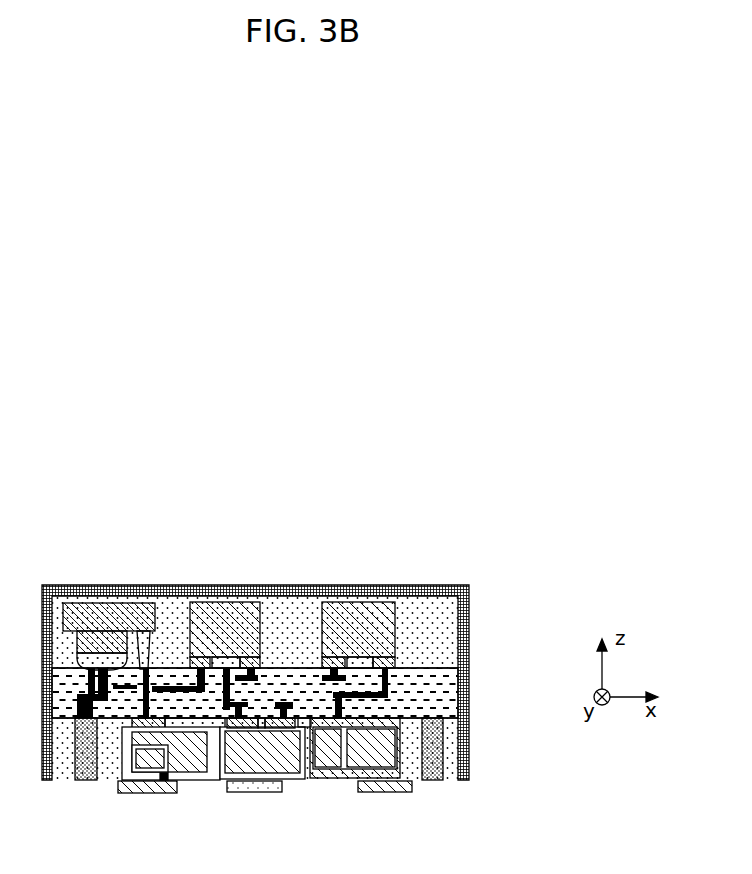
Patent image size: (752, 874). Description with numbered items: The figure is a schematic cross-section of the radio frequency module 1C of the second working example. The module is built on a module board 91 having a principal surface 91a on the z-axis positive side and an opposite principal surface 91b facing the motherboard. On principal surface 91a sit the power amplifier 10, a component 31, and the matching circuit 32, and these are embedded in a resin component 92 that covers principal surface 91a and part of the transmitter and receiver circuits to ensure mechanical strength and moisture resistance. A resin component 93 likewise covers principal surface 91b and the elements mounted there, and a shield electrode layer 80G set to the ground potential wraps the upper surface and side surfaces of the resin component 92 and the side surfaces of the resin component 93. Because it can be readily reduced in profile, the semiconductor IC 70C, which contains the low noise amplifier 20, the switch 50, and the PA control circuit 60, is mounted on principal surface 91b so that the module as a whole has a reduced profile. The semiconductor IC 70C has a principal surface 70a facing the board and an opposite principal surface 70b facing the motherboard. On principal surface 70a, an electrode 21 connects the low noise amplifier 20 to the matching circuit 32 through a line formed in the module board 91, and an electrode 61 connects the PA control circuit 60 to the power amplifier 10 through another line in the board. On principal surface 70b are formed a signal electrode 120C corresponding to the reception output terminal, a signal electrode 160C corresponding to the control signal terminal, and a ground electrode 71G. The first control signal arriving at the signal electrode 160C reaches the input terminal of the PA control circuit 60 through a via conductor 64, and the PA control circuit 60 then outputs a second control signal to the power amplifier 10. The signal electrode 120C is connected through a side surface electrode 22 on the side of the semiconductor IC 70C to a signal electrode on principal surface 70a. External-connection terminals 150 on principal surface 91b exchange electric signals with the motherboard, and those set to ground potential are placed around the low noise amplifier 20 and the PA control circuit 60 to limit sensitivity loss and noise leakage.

The radio frequency module 1C is at (512, 586).
The power amplifier 10 is at (130, 617).
The low noise amplifier 20 is at (338, 760).
The electrode 21 is at (312, 722).
The side surface electrode 22 is at (407, 767).
The electronic component 31 is at (236, 623).
The matching circuit 32 is at (360, 623).
The switch 50 is at (220, 775).
The PA control circuit 60 is at (190, 763).
The electrode 61 is at (131, 722).
The via conductor 64 is at (169, 779).
The principal surface 70a is at (302, 718).
The principal surface 70b is at (290, 781).
The semiconductor IC 70C is at (347, 779).
The ground electrode 71G is at (243, 792).
The shield electrode layer 80G is at (73, 585).
The module board 91 is at (460, 686).
The principal surface 91a is at (435, 667).
The principal surface 91b is at (457, 721).
The resin component 92 is at (442, 632).
The resin component 93 is at (452, 750).
The signal electrode 120C is at (382, 786).
The external-connection terminals 150 is at (85, 768).
The signal electrode 160C is at (147, 793).